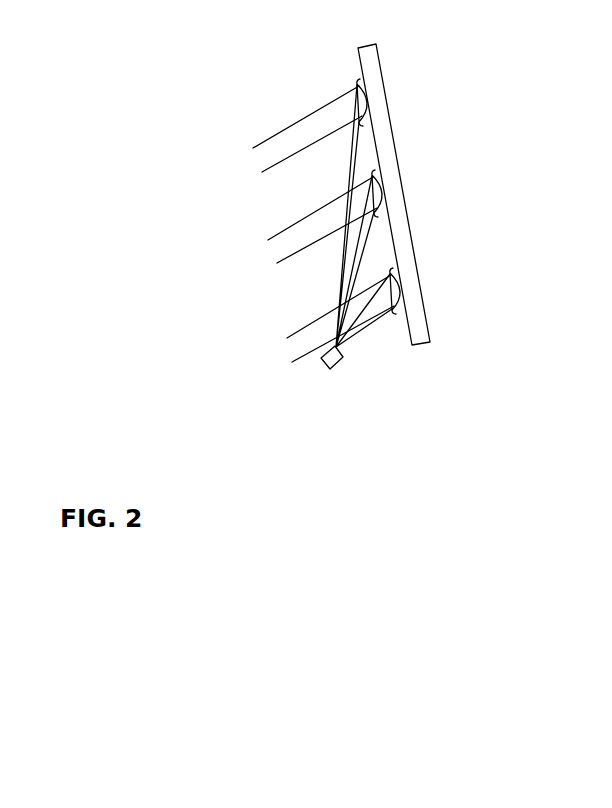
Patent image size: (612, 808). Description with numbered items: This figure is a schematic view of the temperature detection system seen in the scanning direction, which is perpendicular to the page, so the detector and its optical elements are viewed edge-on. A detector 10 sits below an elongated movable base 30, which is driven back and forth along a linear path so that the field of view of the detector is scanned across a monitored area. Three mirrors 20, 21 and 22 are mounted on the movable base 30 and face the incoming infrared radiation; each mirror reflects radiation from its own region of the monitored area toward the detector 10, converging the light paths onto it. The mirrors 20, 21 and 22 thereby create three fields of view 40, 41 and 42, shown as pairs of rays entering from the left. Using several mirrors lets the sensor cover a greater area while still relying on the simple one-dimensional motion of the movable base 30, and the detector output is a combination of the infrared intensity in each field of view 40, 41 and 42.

The detector 10 is at (337, 364).
The mirror 20 is at (367, 99).
The mirror 21 is at (384, 192).
The mirror 22 is at (400, 287).
The movable base 30 is at (357, 48).
The field of view 40 is at (267, 155).
The field of view 41 is at (278, 247).
The field of view 42 is at (302, 343).